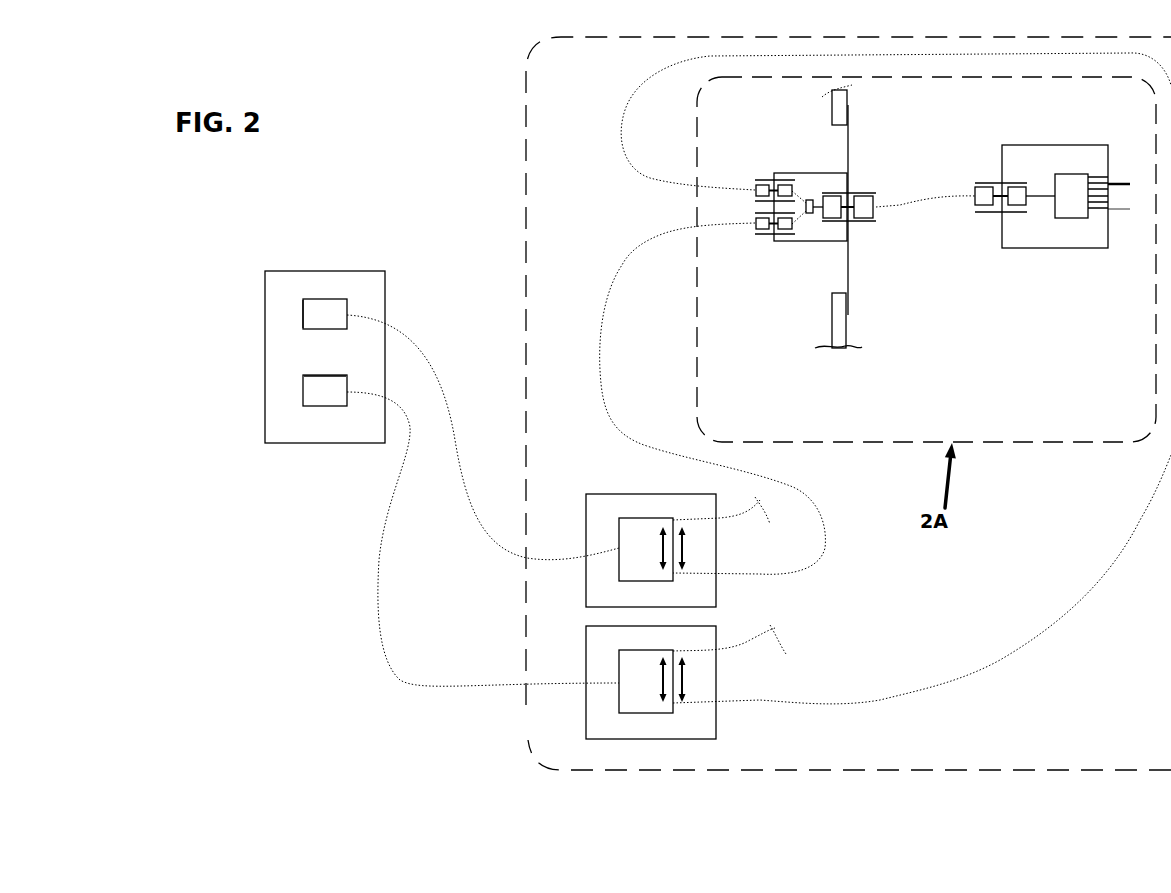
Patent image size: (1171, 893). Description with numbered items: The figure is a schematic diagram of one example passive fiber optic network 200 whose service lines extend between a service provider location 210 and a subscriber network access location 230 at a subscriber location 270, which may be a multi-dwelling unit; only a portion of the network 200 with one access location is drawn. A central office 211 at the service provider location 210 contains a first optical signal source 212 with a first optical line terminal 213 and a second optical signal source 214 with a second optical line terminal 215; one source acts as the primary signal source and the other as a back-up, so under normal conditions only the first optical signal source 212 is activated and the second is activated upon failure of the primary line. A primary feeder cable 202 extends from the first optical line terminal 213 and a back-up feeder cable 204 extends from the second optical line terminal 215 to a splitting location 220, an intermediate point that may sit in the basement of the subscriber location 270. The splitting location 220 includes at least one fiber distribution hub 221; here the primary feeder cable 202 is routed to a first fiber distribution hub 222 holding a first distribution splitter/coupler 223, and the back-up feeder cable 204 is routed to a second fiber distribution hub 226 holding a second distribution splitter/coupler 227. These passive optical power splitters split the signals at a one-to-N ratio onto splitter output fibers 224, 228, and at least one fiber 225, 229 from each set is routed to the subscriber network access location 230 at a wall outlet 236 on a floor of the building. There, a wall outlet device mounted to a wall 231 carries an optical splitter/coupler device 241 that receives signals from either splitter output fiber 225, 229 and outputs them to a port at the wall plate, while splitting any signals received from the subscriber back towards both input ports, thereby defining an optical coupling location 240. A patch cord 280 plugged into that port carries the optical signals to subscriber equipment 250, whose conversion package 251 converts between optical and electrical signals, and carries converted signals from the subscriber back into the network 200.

The passive fiber optic network 200 is at (480, 166).
The primary feeder cable 202 is at (458, 505).
The back-up feeder cable 204 is at (375, 640).
The service provider location 210 is at (296, 365).
The central office 211 is at (367, 273).
The first optical signal source 212 is at (317, 285).
The first optical line terminal 213 is at (302, 307).
The second optical signal source 214 is at (298, 421).
The second optical line terminal 215 is at (317, 402).
The splitting location 220 is at (688, 628).
The fiber distribution hub 221 is at (645, 751).
The first fiber distribution hub 222 is at (690, 593).
The first distribution splitter/coupler 223 is at (617, 530).
The splitter output fibers 224 is at (677, 530).
The first splitter output fiber 225 is at (602, 305).
The second fiber distribution hub 226 is at (690, 718).
The second distribution splitter/coupler 227 is at (612, 702).
The splitter output fibers 228 is at (677, 673).
The second splitter output fiber 229 is at (1022, 641).
The subscriber network access location 230 is at (857, 180).
The wall 231 is at (833, 322).
The wall outlet 236 is at (871, 287).
The optical coupling location 240 is at (725, 212).
The optical splitter/coupler device 241 is at (808, 183).
The subscriber equipment 250 is at (1052, 244).
The conversion package 251 is at (1069, 198).
The subscriber location 270 is at (897, 765).
The patch cord 280 is at (931, 190).